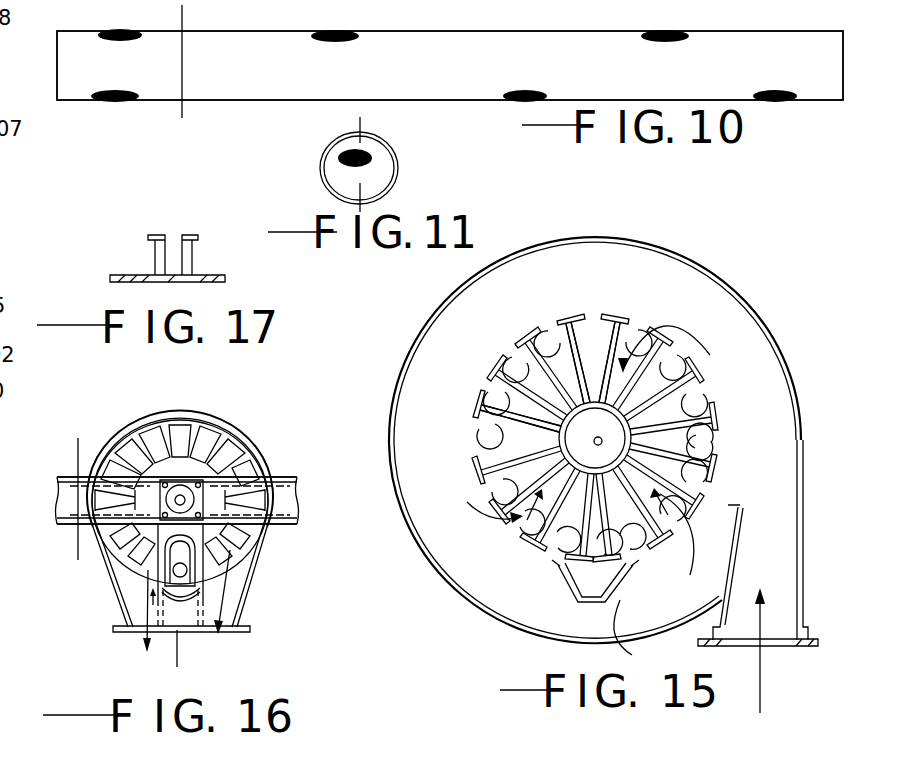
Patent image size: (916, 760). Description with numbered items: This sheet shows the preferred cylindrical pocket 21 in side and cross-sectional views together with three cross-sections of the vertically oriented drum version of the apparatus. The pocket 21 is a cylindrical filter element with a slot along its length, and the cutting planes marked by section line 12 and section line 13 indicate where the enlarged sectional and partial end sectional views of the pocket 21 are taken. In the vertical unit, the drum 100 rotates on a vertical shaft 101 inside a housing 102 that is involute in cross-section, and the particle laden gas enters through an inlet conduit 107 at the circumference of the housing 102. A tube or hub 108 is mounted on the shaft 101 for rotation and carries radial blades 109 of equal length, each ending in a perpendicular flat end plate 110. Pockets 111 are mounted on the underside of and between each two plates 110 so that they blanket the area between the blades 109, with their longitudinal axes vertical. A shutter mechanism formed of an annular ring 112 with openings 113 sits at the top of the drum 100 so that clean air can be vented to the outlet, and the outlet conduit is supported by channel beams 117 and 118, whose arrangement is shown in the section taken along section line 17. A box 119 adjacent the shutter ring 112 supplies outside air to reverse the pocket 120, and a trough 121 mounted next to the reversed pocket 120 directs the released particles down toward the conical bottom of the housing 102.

In FIG. 10, the section line 12- 12 is at (203, 113).
In FIG. 11, the section line 13- 13 is at (322, 205).
In FIG. 16, the section line 17- 17 is at (50, 551).
In FIG. 10, the cylindrical pocket 21 is at (823, 61).
In FIG. 15, the drum 100 is at (714, 379).
In FIG. 16, the vertical shaft 101 is at (183, 487).
In FIG. 15, the vertical shaft 101 is at (606, 426).
In FIG. 15, the housing 102 is at (803, 422).
In FIG. 15, the inlet conduit 107 is at (803, 577).
In FIG. 15, the hub 108 is at (498, 432).
In FIG. 15, the radial blades 109 is at (714, 460).
In FIG. 15, the flat end plates 110 is at (668, 540).
In FIG. 15, the pockets 111 is at (594, 345).
In FIG. 16, the annular ring 112 is at (240, 453).
In FIG. 16, the openings 113 is at (222, 468).
In FIG. 17, the channel beam 117 is at (157, 233).
In FIG. 16, the channel beam 117 is at (284, 475).
In FIG. 17, the channel beam 118 is at (190, 233).
In FIG. 16, the channel beam 118 is at (97, 545).
In FIG. 16, the box 119 is at (192, 632).
In FIG. 15, the reversed pocket 120 is at (562, 568).
In FIG. 15, the trough 121 is at (643, 634).